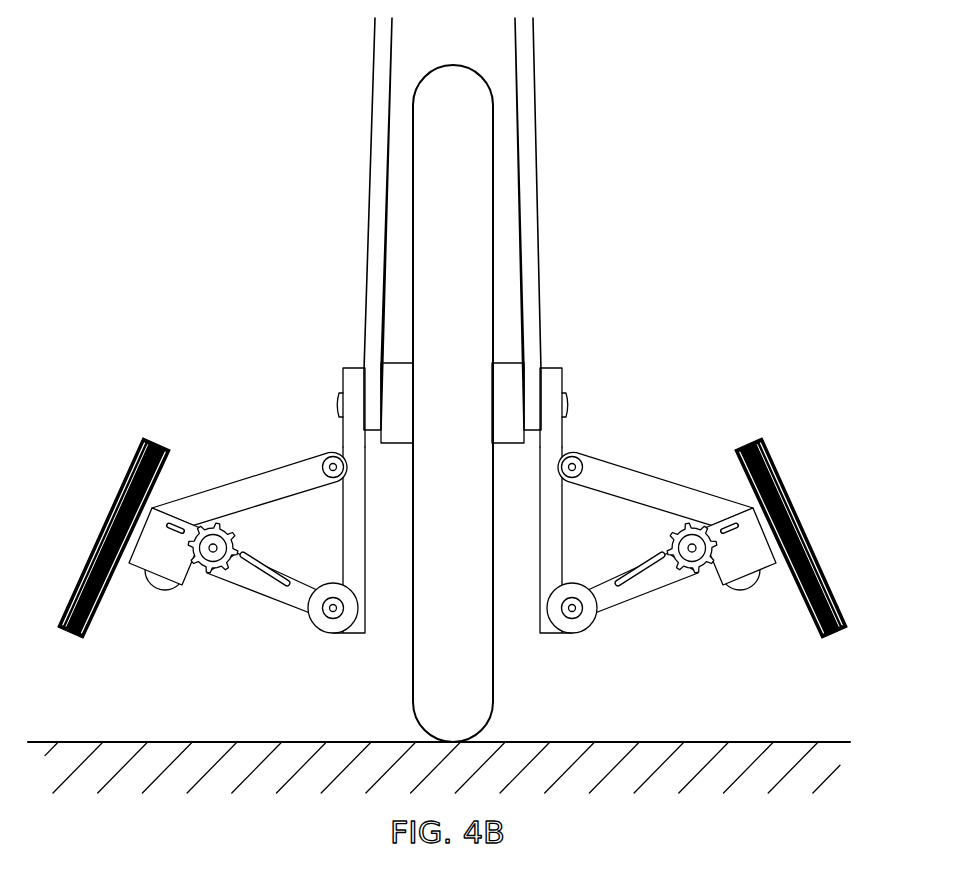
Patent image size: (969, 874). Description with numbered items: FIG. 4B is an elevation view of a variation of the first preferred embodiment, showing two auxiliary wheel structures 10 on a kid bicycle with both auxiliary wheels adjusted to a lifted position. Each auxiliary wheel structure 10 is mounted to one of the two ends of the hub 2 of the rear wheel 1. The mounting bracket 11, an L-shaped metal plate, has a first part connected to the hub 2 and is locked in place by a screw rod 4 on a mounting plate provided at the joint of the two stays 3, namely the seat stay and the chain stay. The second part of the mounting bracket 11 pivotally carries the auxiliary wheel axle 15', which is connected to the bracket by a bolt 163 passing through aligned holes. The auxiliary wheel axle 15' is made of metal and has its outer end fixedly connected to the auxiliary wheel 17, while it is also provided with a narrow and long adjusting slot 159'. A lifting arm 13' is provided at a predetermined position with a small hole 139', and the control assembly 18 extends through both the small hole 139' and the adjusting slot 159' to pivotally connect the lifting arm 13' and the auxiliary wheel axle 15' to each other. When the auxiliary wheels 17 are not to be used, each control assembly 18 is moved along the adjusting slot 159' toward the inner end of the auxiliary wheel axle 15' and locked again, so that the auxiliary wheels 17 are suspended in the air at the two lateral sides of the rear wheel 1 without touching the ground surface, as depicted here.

The rear wheel 1 is at (465, 100).
The hub 2 is at (390, 392).
The stays 3 is at (542, 277).
The screw rod 4 is at (568, 397).
The auxiliary wheel structure 10 is at (779, 322).
The mounting bracket 11 is at (560, 537).
The lifting arm 13' is at (655, 463).
The auxiliary wheel axle 15' is at (634, 591).
The auxiliary wheel 17 is at (757, 442).
The control assembly 18 is at (691, 490).
The small hole 139' is at (693, 611).
The adjusting slot 159' is at (616, 550).
The bolt 163 is at (580, 617).